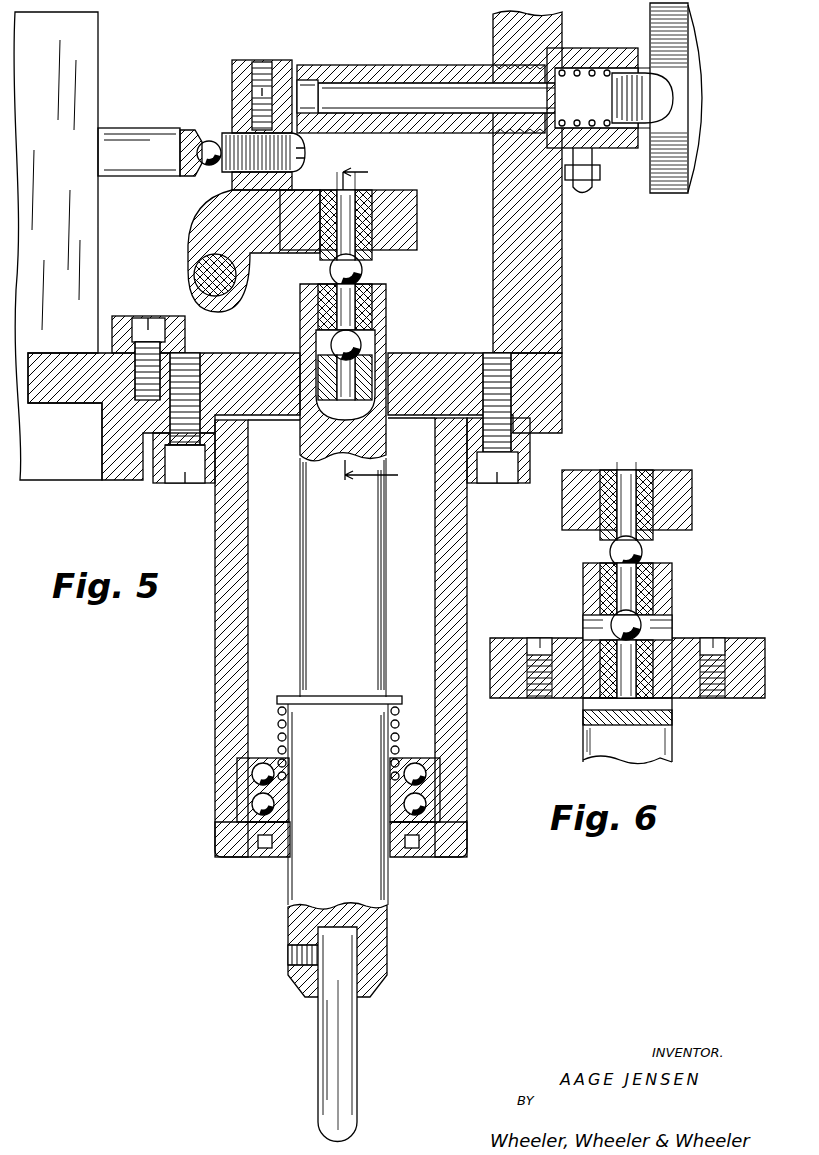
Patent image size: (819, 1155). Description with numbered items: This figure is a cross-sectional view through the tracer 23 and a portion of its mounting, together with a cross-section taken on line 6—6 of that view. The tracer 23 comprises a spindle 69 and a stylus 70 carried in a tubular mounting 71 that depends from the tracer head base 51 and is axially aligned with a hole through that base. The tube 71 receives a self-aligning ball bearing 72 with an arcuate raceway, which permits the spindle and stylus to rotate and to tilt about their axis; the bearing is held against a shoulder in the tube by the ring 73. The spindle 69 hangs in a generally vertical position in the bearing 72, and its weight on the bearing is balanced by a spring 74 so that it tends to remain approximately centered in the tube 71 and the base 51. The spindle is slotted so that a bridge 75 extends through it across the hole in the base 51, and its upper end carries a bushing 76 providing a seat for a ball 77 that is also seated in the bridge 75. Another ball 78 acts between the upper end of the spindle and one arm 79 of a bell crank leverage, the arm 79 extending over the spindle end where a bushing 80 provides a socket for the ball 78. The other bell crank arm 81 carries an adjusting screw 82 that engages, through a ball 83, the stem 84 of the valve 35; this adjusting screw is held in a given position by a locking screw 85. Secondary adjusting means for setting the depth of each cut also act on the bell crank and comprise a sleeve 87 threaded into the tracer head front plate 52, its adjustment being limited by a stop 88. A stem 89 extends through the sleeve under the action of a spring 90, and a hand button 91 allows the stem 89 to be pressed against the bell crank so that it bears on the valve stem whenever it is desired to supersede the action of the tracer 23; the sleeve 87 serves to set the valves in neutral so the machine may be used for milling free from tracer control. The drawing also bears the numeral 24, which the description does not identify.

In FIG. 5, the section line 6— 6 is at (379, 317).
In FIG. 5, the tracer 23 is at (340, 1078).
In FIG. 5, the support block 24 is at (570, 262).
In FIG. 5, the valve 35 is at (88, 80).
In FIG. 5, the tracer head base 51 is at (82, 396).
In FIG. 6, the tracer head base 51 is at (742, 650).
In FIG. 5, the tracer head front plate 52 is at (552, 30).
In FIG. 5, the spindle 69 is at (310, 550).
In FIG. 6, the spindle 69 is at (605, 745).
In FIG. 5, the stylus 70 is at (330, 1048).
In FIG. 5, the tubular mounting 71 is at (460, 598).
In FIG. 5, the self-aligning ball bearing 72 is at (250, 793).
In FIG. 5, the ring 73 is at (246, 860).
In FIG. 5, the spring 74 is at (400, 742).
In FIG. 5, the bridge 75 is at (362, 372).
In FIG. 6, the bridge 75 is at (660, 650).
In FIG. 5, the bushing 76 is at (372, 310).
In FIG. 6, the bushing 76 is at (655, 583).
In FIG. 5, the ball 77 is at (362, 345).
In FIG. 6, the ball 77 is at (610, 630).
In FIG. 5, the ball 78 is at (365, 272).
In FIG. 6, the ball 78 is at (645, 550).
In FIG. 5, the bell crank arm 79 is at (418, 222).
In FIG. 6, the bell crank arm 79 is at (690, 496).
In FIG. 5, the bushing 80 is at (362, 205).
In FIG. 6, the bushing 80 is at (643, 472).
In FIG. 5, the bell crank arm 81 is at (232, 70).
In FIG. 5, the adjusting screw 82 is at (307, 166).
In FIG. 5, the ball 83 is at (212, 140).
In FIG. 5, the valve stem 84 is at (145, 130).
In FIG. 5, the locking screw 85 is at (252, 92).
In FIG. 5, the sleeve 87 is at (392, 66).
In FIG. 5, the stop 88 is at (590, 182).
In FIG. 5, the stem 89 is at (437, 80).
In FIG. 5, the spring 90 is at (598, 68).
In FIG. 5, the hand button 91 is at (680, 130).